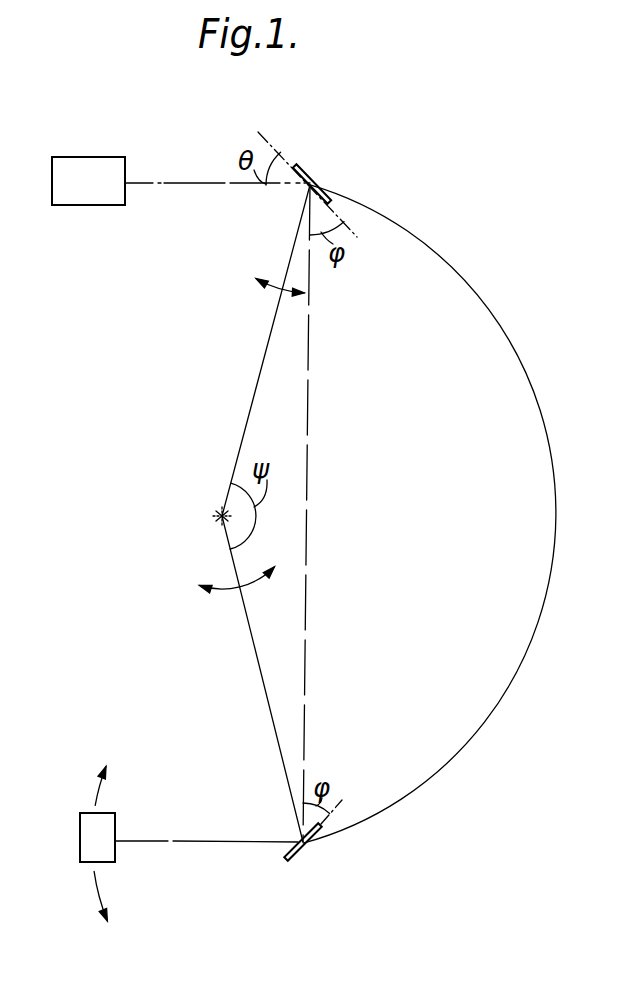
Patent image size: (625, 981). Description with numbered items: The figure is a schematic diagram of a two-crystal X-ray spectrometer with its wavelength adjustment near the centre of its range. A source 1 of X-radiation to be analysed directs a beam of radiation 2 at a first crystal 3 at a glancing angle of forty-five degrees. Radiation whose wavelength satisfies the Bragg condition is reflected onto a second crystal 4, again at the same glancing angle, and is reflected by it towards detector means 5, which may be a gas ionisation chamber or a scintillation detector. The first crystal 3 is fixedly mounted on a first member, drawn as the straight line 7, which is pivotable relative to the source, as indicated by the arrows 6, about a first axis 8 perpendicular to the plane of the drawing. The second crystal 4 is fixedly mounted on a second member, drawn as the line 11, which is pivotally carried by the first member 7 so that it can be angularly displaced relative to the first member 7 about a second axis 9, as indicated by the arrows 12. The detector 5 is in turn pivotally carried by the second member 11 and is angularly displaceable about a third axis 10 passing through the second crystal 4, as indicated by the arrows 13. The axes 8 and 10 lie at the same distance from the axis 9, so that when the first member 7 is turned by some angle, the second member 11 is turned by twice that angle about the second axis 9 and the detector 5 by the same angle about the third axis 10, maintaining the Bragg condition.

The source 1 is at (90, 170).
The beam of radiation 2 is at (178, 183).
The first crystal 3 is at (306, 169).
The second crystal 4 is at (295, 858).
The detector means 5 is at (88, 834).
The arrows 6 is at (280, 289).
The first member 7 is at (253, 395).
The first axis 8 is at (316, 182).
The second axis 9 is at (219, 513).
The third axis 10 is at (311, 846).
The second member 11 is at (271, 718).
The arrows 12 is at (232, 590).
The arrows 13 is at (104, 895).